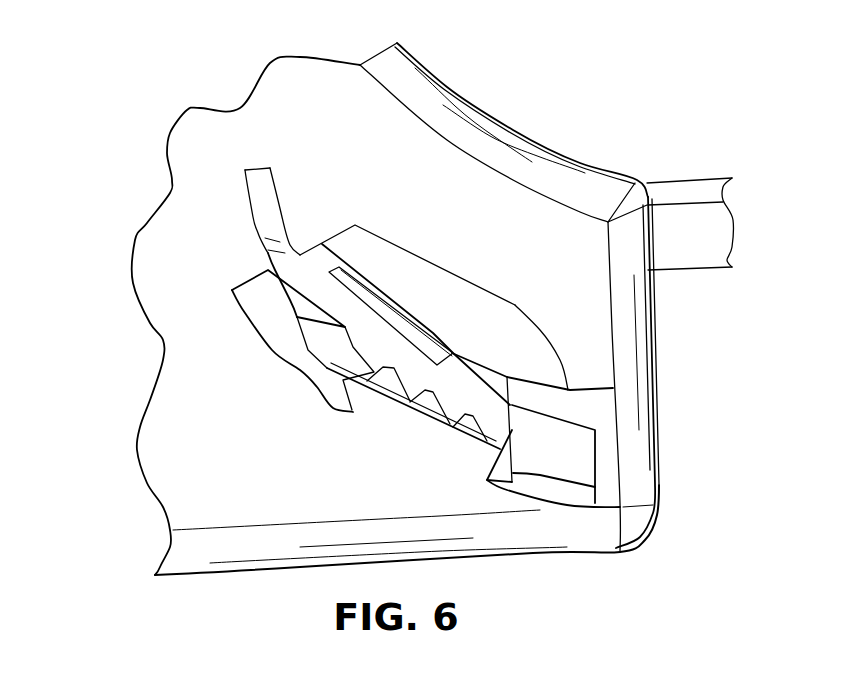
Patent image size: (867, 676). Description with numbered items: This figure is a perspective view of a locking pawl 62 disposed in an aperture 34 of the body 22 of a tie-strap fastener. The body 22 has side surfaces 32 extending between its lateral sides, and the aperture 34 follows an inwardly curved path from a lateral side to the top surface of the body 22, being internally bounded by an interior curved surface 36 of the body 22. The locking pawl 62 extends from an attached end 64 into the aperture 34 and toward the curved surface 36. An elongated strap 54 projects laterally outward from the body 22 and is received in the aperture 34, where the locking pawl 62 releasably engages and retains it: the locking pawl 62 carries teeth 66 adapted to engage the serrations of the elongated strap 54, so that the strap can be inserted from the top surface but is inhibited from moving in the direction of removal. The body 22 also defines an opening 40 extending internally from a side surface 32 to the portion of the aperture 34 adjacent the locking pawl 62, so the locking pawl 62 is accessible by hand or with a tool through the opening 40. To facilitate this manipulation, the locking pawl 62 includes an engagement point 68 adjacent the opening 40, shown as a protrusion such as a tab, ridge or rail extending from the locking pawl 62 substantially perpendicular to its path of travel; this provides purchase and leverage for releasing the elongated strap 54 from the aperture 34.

The body 22 is at (188, 575).
The side surfaces 32 is at (323, 98).
The aperture 34 is at (367, 247).
The interior curved surface 36 is at (553, 493).
The opening 40 is at (608, 477).
The elongated strap 54 is at (675, 188).
The locking pawl 62 is at (493, 422).
The attached end 64 is at (280, 260).
The teeth 66 is at (323, 343).
The engagement point 68 is at (382, 307).